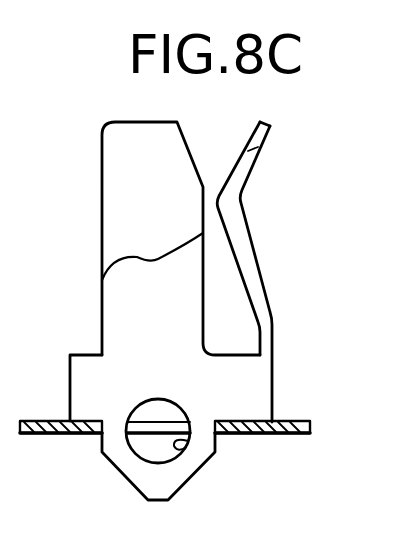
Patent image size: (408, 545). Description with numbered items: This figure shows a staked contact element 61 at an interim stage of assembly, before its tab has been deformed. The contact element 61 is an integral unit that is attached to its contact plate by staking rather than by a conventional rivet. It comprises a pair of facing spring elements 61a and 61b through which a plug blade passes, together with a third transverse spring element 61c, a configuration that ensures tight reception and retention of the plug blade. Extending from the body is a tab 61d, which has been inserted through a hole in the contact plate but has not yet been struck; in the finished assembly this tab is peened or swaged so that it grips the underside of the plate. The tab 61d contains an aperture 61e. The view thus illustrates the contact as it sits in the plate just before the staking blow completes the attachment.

The contact element 61 is at (84, 140).
The spring element 61a is at (113, 221).
The spring element 61b is at (113, 312).
The transverse spring element 61c is at (240, 183).
The tab 61d is at (132, 476).
The aperture 61e is at (183, 448).